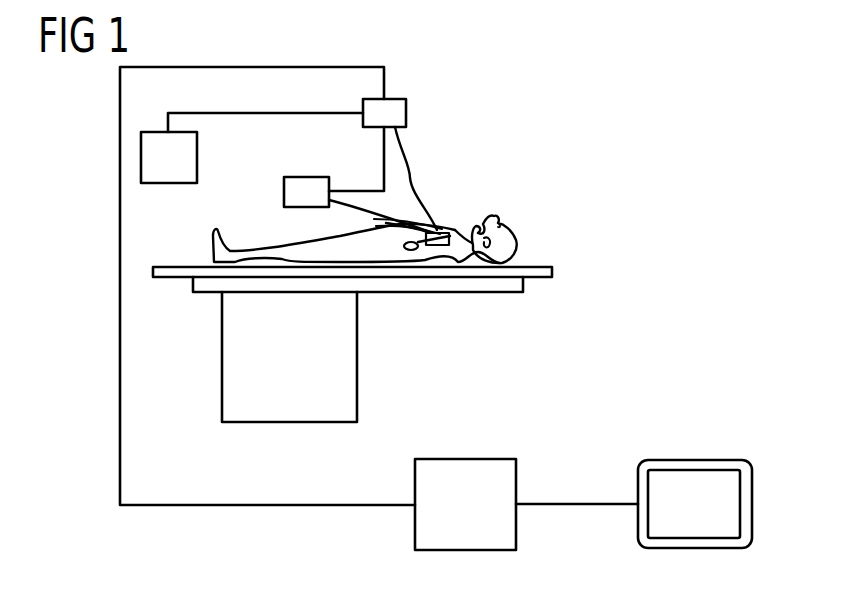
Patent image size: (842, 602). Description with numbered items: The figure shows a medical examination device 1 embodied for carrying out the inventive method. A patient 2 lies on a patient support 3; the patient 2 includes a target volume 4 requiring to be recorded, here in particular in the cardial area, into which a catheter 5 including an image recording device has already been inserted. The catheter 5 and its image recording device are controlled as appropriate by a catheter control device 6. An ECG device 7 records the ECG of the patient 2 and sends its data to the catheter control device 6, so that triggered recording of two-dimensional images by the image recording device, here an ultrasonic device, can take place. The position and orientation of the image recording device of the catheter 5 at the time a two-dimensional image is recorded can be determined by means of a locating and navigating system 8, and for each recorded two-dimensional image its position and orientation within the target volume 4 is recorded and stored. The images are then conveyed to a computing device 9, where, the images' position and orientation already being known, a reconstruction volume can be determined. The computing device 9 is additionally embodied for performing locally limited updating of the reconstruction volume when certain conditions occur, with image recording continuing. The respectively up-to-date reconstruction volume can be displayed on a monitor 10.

The medical examination device 1 is at (560, 152).
The patient 2 is at (512, 241).
The patient support 3 is at (510, 294).
The target volume 4 is at (455, 232).
The catheter 5 is at (440, 228).
The catheter control device 6 is at (398, 97).
The ECG device 7 is at (310, 175).
The locating and navigating system 8 is at (155, 131).
The computing device 9 is at (460, 457).
The monitor 10 is at (685, 458).